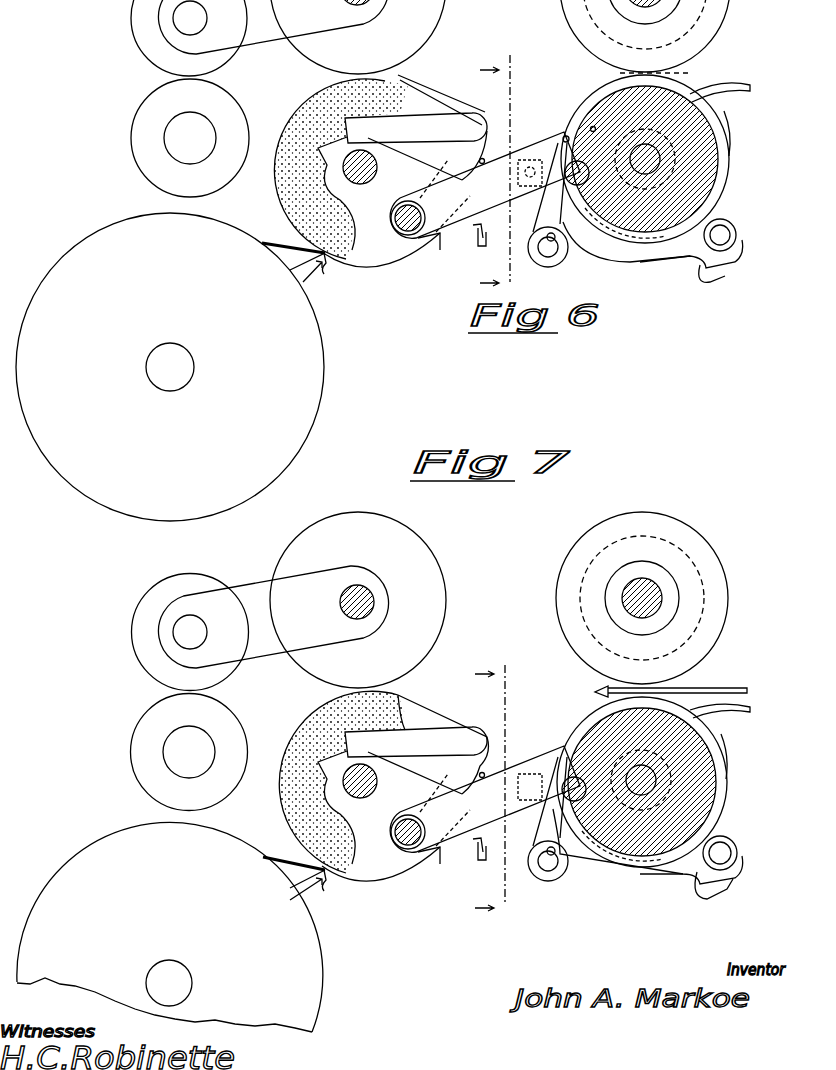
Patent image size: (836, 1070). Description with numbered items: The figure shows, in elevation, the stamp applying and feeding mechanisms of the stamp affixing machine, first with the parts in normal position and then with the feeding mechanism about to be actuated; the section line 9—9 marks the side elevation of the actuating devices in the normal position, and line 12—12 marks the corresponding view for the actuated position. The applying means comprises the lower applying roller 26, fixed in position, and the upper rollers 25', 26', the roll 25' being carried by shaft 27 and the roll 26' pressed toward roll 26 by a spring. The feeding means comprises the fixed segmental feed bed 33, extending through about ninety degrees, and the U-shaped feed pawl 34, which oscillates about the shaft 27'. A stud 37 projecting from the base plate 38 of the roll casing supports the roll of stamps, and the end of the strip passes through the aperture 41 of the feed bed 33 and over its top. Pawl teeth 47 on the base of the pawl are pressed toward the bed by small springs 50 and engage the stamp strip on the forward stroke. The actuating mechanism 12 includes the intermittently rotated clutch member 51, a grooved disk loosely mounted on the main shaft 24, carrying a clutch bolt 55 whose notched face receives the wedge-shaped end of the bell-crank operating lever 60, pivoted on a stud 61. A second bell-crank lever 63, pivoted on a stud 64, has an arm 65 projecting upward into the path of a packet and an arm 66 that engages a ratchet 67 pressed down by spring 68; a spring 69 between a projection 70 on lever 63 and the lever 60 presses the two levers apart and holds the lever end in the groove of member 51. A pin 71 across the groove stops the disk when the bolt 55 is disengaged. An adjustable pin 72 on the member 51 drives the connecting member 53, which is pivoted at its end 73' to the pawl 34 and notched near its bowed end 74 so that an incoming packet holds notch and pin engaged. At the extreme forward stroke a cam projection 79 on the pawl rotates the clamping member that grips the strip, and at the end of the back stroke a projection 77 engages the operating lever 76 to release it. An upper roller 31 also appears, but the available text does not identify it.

In FIG. 6, the section line 9— 9 is at (498, 171).
In FIG. 7, the actuating mechanism 12 is at (492, 790).
In FIG. 7, the main shaft 24 is at (697, 786).
In FIG. 6, the upper applying roller 25' is at (358, 37).
In FIG. 7, the upper applying roller 25' is at (358, 600).
In FIG. 6, the lower applying roller 26 is at (173, 138).
In FIG. 7, the lower applying roller 26 is at (170, 752).
In FIG. 6, the upper applying roller 26' is at (171, 38).
In FIG. 7, the upper applying roller 26' is at (172, 632).
In FIG. 6, the shaft 27 is at (294, 27).
In FIG. 7, the shaft 27 is at (293, 617).
In FIG. 6, the shaft 27' is at (376, 167).
In FIG. 7, the shaft 27' is at (307, 785).
In FIG. 7, the ink roller 31 is at (666, 598).
In FIG. 6, the feed bed 33 is at (402, 199).
In FIG. 7, the feed bed 33 is at (405, 788).
In FIG. 6, the feed pawl 34 is at (430, 257).
In FIG. 7, the feed pawl 34 is at (413, 825).
In FIG. 6, the stud 37 is at (184, 364).
In FIG. 7, the stud 37 is at (169, 967).
In FIG. 6, the base plate 38 is at (170, 367).
In FIG. 7, the base plate 38 is at (171, 927).
In FIG. 6, the aperture 41 is at (320, 276).
In FIG. 7, the aperture 41 is at (310, 888).
In FIG. 6, the pawl teeth 47 is at (478, 247).
In FIG. 7, the pawl teeth 47 is at (473, 863).
In FIG. 6, the small springs 50 is at (478, 236).
In FIG. 7, the small springs 50 is at (451, 865).
In FIG. 6, the intermittently rotated clutch member 51 is at (729, 170).
In FIG. 7, the intermittently rotated clutch member 51 is at (665, 782).
In FIG. 6, the connecting member 53 is at (463, 180).
In FIG. 7, the connecting member 53 is at (485, 786).
In FIG. 6, the clutch bolt 55 is at (593, 127).
In FIG. 6, the operating lever 60 is at (538, 228).
In FIG. 7, the operating lever 60 is at (526, 845).
In FIG. 6, the stud 61 is at (530, 257).
In FIG. 7, the stud 61 is at (548, 874).
In FIG. 6, the second bell crank lever 63 is at (733, 218).
In FIG. 7, the second bell crank lever 63 is at (658, 846).
In FIG. 6, the stud 64 is at (737, 235).
In FIG. 7, the stud 64 is at (736, 853).
In FIG. 6, the arm 65 is at (692, 73).
In FIG. 7, the arm 65 is at (658, 690).
In FIG. 6, the arm 66 is at (616, 243).
In FIG. 7, the arm 66 is at (622, 846).
In FIG. 6, the ratchet 67 is at (531, 166).
In FIG. 6, the spring 68 is at (546, 204).
In FIG. 7, the spring 68 is at (527, 801).
In FIG. 6, the spring 69 is at (690, 258).
In FIG. 7, the spring 69 is at (661, 886).
In FIG. 6, the projection 70 is at (712, 281).
In FIG. 7, the projection 70 is at (722, 888).
In FIG. 6, the pin 71 is at (565, 136).
In FIG. 6, the pin 72 is at (730, 137).
In FIG. 7, the pin 72 is at (738, 754).
In FIG. 6, the end of connecting member 73' is at (399, 249).
In FIG. 7, the end of connecting member 73' is at (393, 839).
In FIG. 6, the end of connecting member 74 is at (751, 89).
In FIG. 7, the end of connecting member 74 is at (735, 708).
In FIG. 6, the operating lever 76 is at (416, 109).
In FIG. 7, the operating lever 76 is at (416, 742).
In FIG. 6, the engaging projection 77 is at (327, 160).
In FIG. 7, the engaging projection 77 is at (332, 782).
In FIG. 6, the cam projection 79 is at (485, 160).
In FIG. 7, the cam projection 79 is at (497, 767).